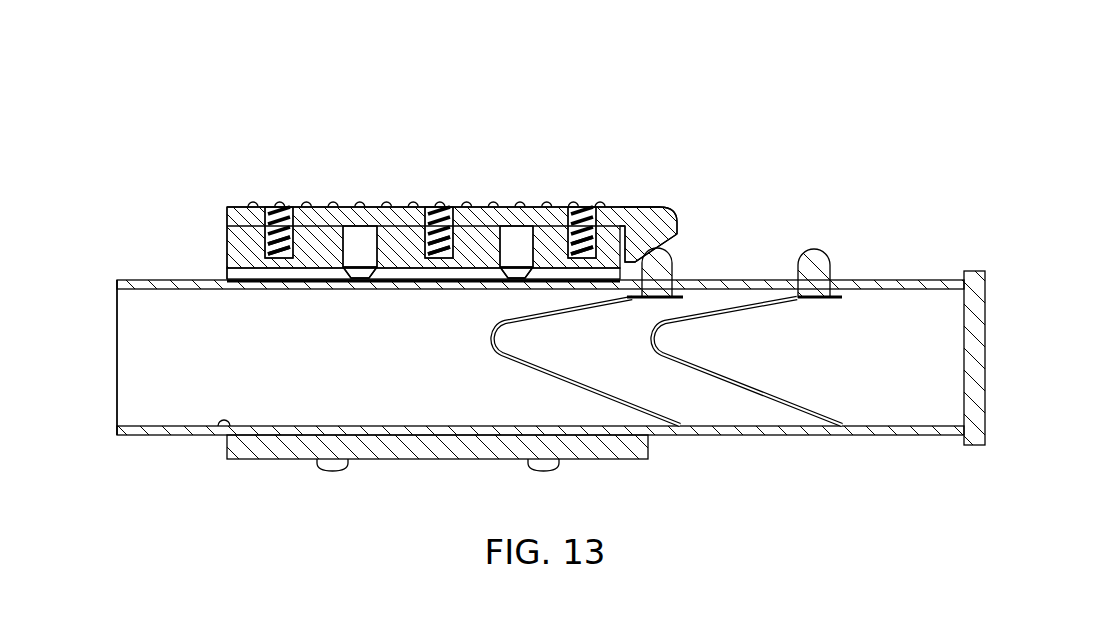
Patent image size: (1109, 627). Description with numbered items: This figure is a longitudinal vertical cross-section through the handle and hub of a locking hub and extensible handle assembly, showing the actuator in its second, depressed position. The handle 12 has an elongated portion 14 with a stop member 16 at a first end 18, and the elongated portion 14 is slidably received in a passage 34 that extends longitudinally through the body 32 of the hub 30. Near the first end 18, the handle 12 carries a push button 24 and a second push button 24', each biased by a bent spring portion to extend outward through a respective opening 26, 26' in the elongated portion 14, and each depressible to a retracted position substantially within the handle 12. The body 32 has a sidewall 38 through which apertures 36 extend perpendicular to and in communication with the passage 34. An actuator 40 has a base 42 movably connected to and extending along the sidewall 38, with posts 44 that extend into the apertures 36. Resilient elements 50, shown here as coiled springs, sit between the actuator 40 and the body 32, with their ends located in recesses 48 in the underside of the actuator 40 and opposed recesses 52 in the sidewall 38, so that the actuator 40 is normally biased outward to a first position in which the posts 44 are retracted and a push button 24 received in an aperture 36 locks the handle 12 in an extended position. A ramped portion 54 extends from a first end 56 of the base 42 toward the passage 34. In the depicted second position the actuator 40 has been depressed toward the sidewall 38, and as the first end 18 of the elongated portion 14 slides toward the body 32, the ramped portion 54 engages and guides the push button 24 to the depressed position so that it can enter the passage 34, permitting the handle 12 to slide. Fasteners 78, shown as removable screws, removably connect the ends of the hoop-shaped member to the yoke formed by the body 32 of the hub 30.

The handle 12 is at (191, 438).
The elongated portion 14 is at (146, 432).
The stop member 16 is at (975, 272).
The first end 18 is at (925, 279).
The push button 24 is at (629, 306).
The second push button 24' is at (756, 282).
The opening 26 is at (690, 266).
The opening 26' is at (839, 253).
The hub 30 is at (369, 462).
The body 32 is at (424, 443).
The passage 34 is at (221, 423).
The aperture 36 is at (367, 227).
The sidewall 38 is at (233, 241).
The actuator 40 is at (305, 198).
The base 42 is at (233, 213).
The post 44 is at (355, 245).
The recess 48 is at (280, 207).
The resilient element 50 is at (275, 215).
The opposed recess 52 is at (278, 260).
The ramped portion 54 is at (692, 230).
The first end 56 is at (643, 215).
The fasteners 78 is at (326, 468).